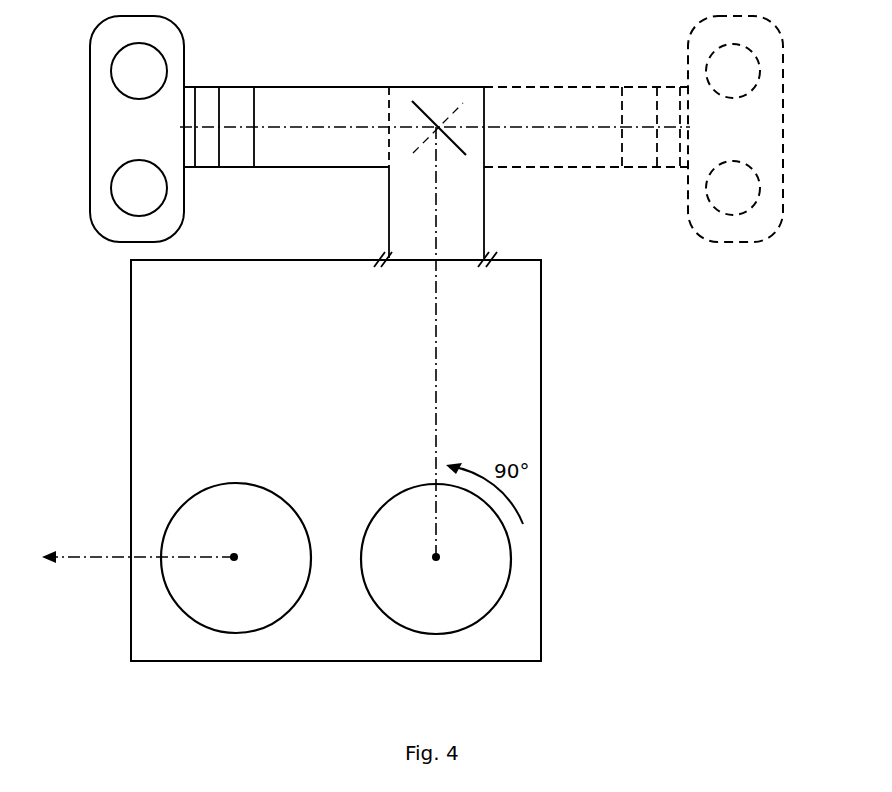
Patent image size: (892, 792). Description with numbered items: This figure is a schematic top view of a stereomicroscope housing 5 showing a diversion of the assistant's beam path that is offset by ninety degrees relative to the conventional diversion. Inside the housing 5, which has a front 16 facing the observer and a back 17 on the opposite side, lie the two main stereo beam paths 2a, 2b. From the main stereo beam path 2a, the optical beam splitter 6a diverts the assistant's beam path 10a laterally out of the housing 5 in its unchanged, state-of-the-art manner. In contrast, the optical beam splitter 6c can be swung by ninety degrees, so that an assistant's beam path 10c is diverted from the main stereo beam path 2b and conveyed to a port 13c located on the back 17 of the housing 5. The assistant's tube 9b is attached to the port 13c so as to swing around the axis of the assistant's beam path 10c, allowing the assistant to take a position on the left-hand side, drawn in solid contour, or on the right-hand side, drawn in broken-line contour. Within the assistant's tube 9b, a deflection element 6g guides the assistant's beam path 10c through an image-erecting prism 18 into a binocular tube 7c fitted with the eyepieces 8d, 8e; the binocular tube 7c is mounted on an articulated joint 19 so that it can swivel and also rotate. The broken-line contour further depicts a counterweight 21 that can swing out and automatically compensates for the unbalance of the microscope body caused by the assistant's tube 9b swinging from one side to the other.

The binocular tube 7c is at (146, 122).
The eyepiece 8e is at (146, 72).
The eyepiece 8d is at (142, 194).
The articulated joint 19 is at (190, 103).
The image-erecting prism 18 is at (238, 103).
The assistant's tube 9b is at (287, 107).
The port 13c is at (417, 262).
The deflection element 6g is at (430, 124).
The counterweight 21 is at (565, 96).
The housing 5 is at (148, 637).
The back 17 is at (262, 260).
The front 16 is at (240, 662).
The assistant's beam path 10c is at (438, 352).
The assistant's beam path 10a is at (92, 556).
The optical beam splitter 6a is at (236, 558).
The optical beam splitter 6c is at (436, 559).
The main stereo beam path 2a is at (240, 560).
The main stereo beam path 2b is at (432, 558).